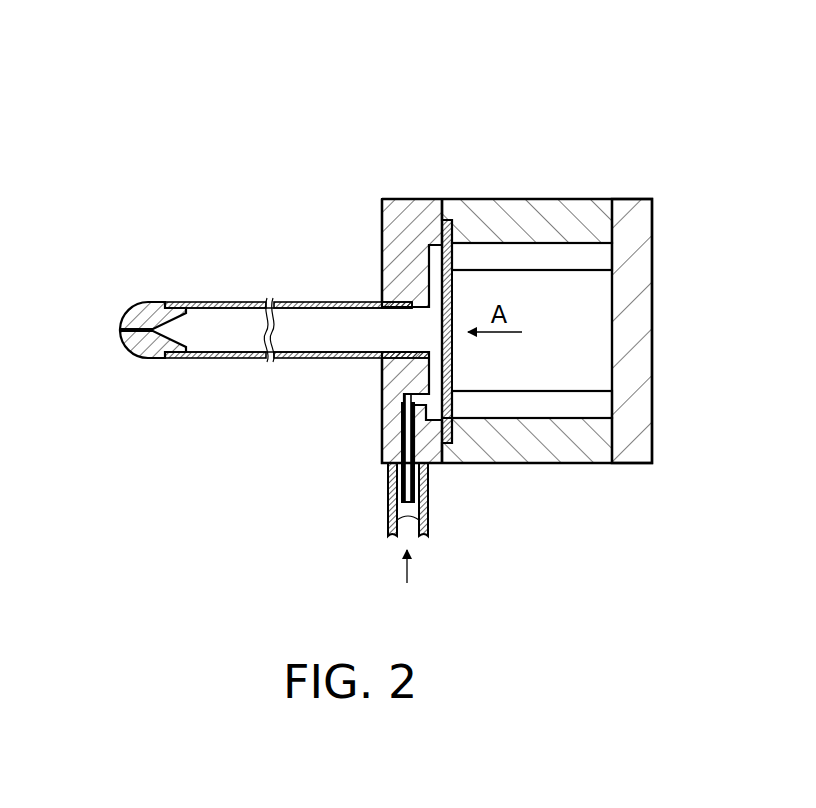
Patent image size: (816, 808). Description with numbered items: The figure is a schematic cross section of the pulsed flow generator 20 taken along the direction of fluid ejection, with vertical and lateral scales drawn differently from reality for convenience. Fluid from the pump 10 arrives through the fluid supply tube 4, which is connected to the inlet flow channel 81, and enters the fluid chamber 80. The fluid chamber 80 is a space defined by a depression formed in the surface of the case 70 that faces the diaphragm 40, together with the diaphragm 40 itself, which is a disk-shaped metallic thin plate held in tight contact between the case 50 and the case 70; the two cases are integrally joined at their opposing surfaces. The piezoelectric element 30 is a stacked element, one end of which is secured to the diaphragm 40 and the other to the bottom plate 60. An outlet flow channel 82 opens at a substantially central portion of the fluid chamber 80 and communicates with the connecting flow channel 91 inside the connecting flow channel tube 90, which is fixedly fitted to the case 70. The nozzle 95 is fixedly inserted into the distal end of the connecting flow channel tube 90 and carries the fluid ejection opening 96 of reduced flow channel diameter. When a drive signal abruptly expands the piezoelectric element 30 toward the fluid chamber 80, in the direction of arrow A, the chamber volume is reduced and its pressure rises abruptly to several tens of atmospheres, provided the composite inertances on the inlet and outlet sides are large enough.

The pulsed flow generator 20 is at (594, 106).
The piezoelectric element 30 is at (533, 270).
The diaphragm 40 is at (454, 257).
The case 50 is at (587, 199).
The bottom plate 60 is at (633, 199).
The case 70 is at (382, 391).
The fluid chamber 80 is at (453, 363).
The inlet flow channel 81 is at (400, 432).
The outlet flow channel 82 is at (412, 330).
The connecting flow channel tube 90 is at (234, 300).
The connecting flow channel 91 is at (228, 340).
The nozzle 95 is at (158, 300).
The fluid ejection opening 96 is at (118, 332).
The fluid supply tube 4 is at (388, 510).
The pump 10 is at (408, 583).